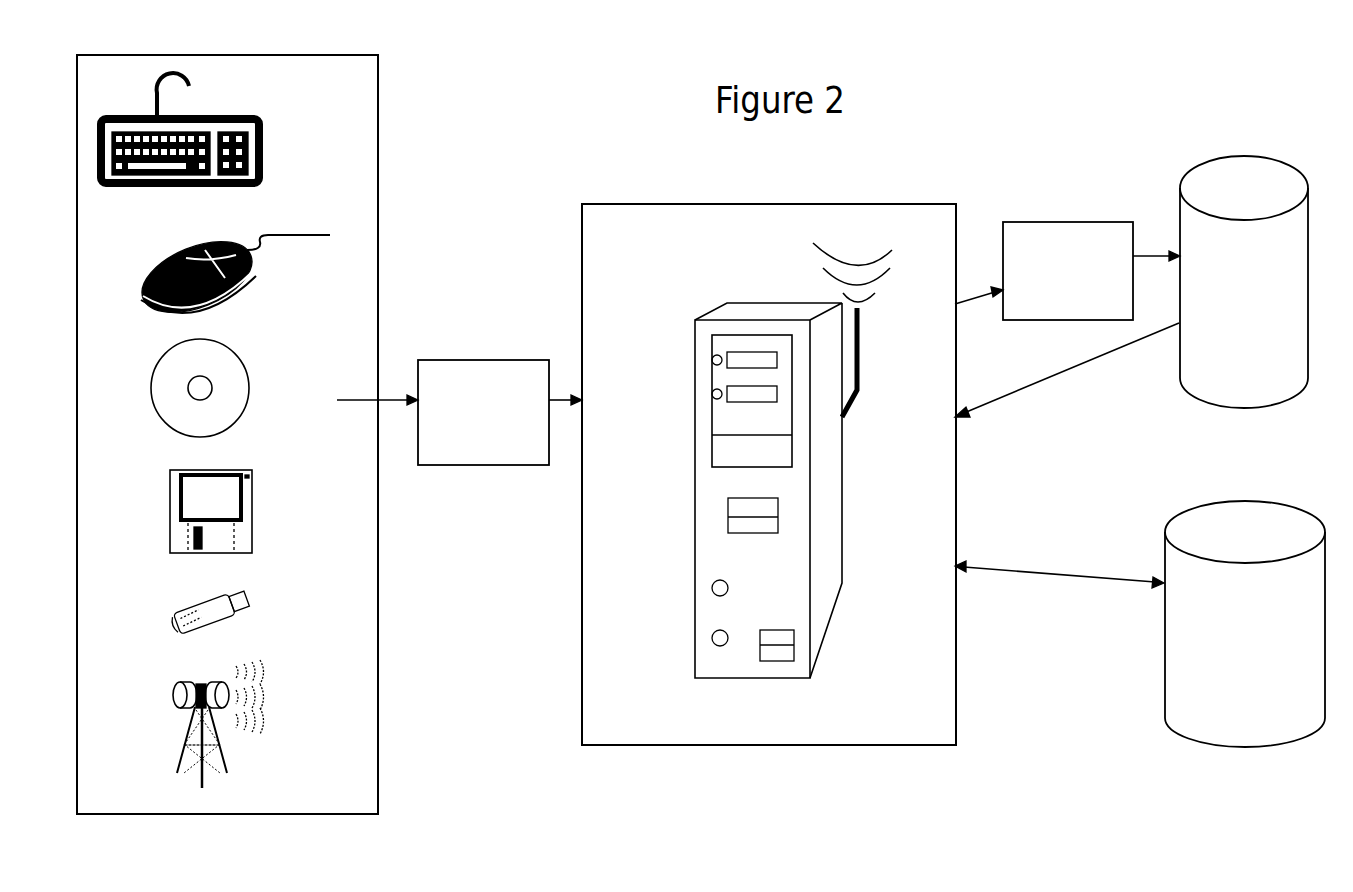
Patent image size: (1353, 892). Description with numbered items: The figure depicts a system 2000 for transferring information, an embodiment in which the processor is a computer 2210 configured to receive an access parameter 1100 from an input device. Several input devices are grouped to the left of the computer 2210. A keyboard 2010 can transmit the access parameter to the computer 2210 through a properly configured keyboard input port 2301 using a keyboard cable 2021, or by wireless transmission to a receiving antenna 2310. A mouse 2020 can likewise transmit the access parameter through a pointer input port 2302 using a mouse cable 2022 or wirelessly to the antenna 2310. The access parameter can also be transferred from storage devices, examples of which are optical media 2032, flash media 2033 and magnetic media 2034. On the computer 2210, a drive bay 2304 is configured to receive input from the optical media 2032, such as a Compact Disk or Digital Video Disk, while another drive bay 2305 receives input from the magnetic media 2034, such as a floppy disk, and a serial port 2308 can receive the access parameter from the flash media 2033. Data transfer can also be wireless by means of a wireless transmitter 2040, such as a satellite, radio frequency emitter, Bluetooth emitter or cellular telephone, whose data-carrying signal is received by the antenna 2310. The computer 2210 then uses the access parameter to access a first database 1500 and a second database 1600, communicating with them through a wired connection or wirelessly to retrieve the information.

The system 2000 is at (958, 155).
The keyboard 2010 is at (263, 155).
The keyboard cable 2021 is at (157, 103).
The mouse 2020 is at (255, 267).
The mouse cable 2022 is at (270, 235).
The optical media 2032 is at (213, 373).
The magnetic media 2034 is at (253, 495).
The flash media 2033 is at (207, 628).
The wireless transmitter 2040 is at (268, 678).
The access parameter 1100 is at (775, 343).
The computer 2210 is at (770, 203).
The drive bay 2304 is at (712, 391).
The drive bay 2305 is at (728, 517).
The keyboard input port 2301 is at (712, 598).
The pointer input port 2302 is at (713, 647).
The serial port 2308 is at (794, 647).
The receiving antenna 2310 is at (863, 385).
The first database 1500 is at (1222, 392).
The second database 1600 is at (1223, 732).